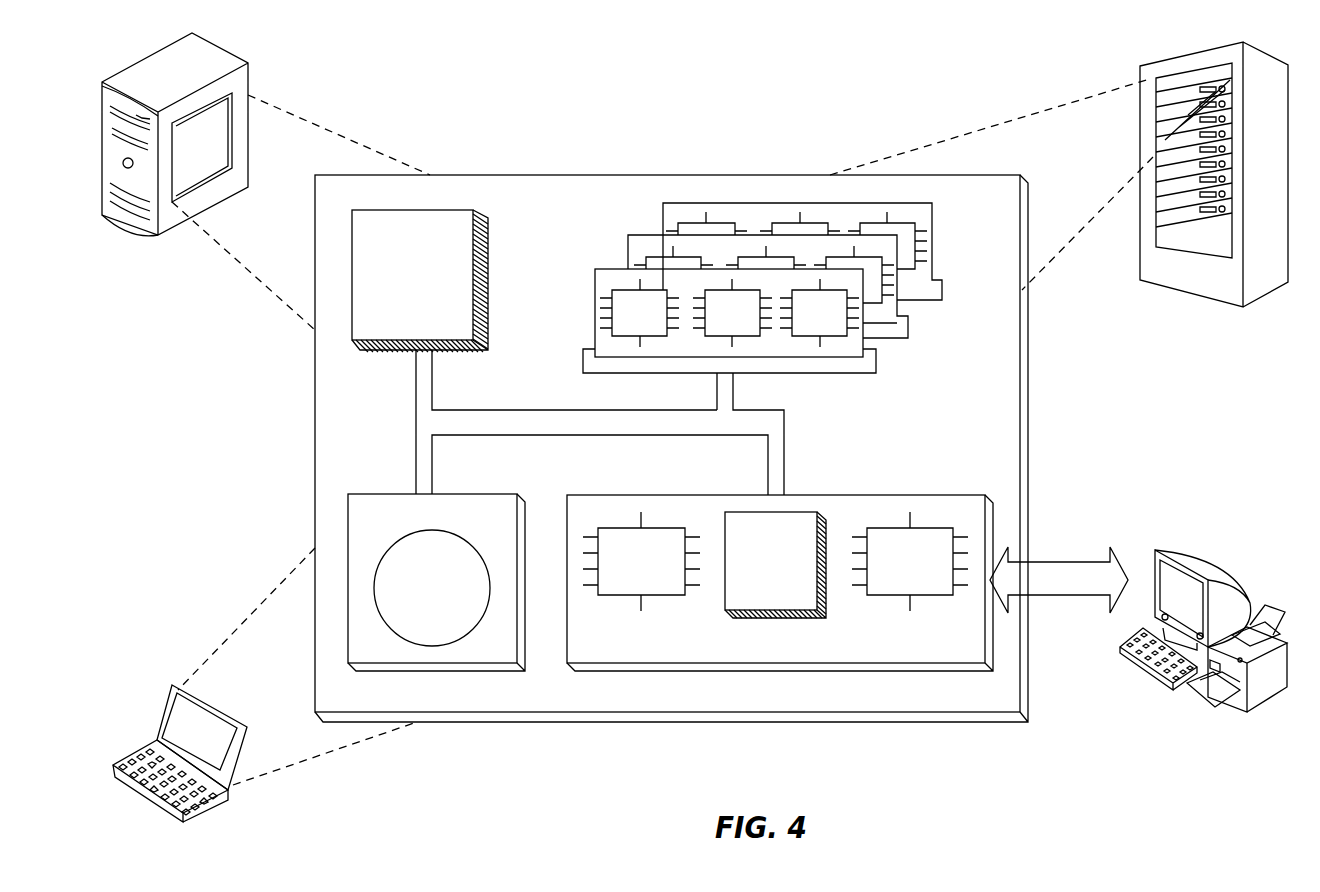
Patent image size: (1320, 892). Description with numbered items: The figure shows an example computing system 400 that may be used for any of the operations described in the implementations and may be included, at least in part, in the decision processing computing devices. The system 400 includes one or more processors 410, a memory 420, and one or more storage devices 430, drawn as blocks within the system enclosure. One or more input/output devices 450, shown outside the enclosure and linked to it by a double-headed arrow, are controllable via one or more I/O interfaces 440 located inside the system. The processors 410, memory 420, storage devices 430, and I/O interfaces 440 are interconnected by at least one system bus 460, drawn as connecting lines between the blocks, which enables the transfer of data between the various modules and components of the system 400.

The computing system 400 is at (501, 100).
The processor 410 is at (420, 281).
The memory 420 is at (938, 338).
The storage device 430 is at (436, 582).
The I/O interface 440 is at (780, 583).
The input/output device 450 is at (1155, 552).
The system bus 460 is at (596, 428).